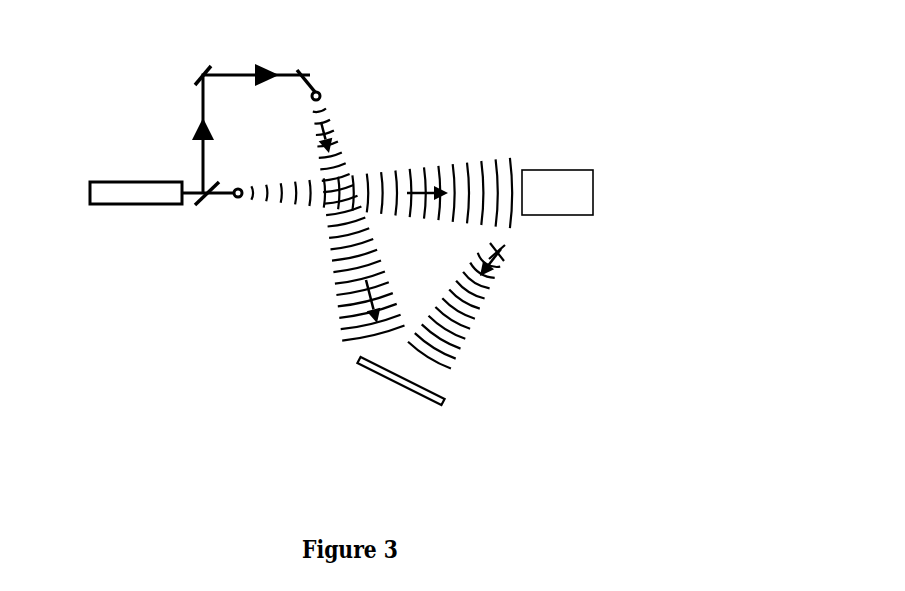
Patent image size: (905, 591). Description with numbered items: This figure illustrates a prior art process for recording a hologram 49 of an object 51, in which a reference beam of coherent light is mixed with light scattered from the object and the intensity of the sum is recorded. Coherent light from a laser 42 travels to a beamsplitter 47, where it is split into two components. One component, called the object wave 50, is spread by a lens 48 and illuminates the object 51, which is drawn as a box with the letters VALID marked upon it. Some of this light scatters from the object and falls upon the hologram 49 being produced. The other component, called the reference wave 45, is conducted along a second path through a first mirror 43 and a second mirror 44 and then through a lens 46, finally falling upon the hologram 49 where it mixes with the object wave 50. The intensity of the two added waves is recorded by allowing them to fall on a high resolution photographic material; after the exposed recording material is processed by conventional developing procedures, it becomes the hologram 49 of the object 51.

The laser 42 is at (118, 182).
The mirror 43 is at (207, 75).
The mirror 44 is at (312, 82).
The reference wave 45 is at (330, 122).
The lens 46 is at (317, 90).
The beamsplitter 47 is at (200, 200).
The lens 48 is at (240, 202).
The hologram 49 is at (443, 402).
The object wave 50 is at (497, 257).
The object 51 is at (553, 170).